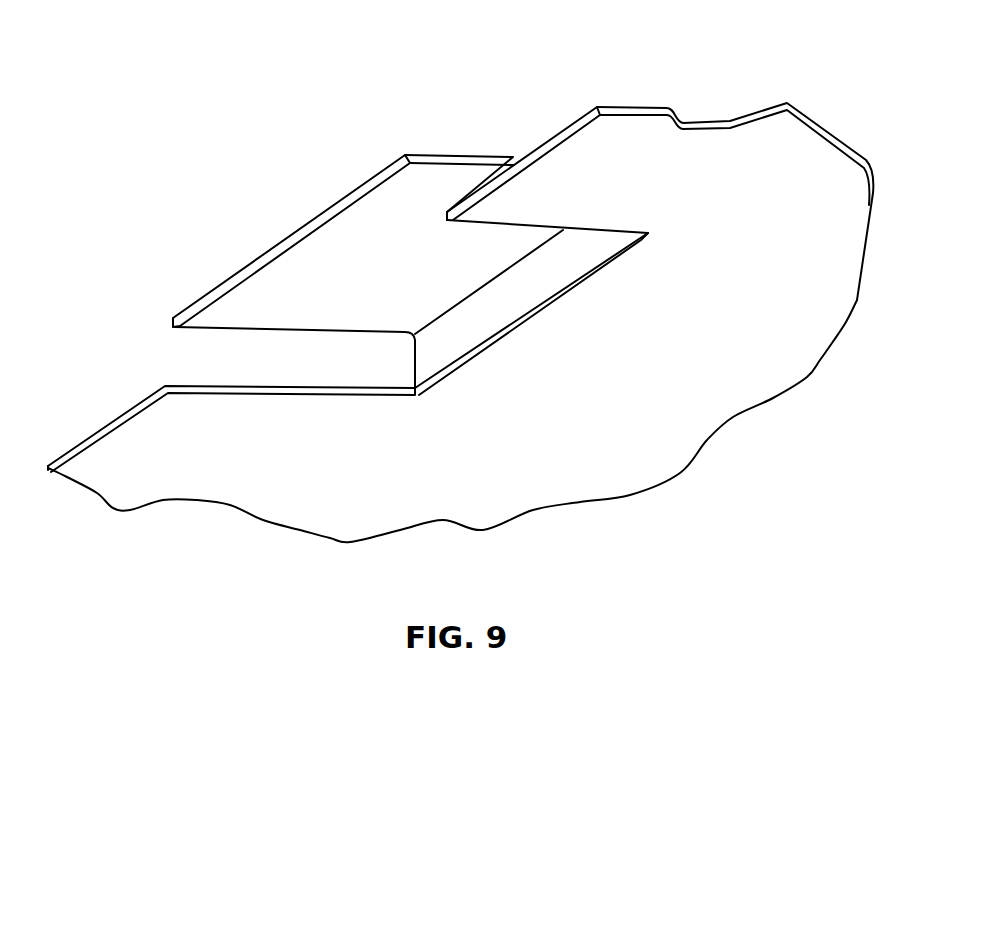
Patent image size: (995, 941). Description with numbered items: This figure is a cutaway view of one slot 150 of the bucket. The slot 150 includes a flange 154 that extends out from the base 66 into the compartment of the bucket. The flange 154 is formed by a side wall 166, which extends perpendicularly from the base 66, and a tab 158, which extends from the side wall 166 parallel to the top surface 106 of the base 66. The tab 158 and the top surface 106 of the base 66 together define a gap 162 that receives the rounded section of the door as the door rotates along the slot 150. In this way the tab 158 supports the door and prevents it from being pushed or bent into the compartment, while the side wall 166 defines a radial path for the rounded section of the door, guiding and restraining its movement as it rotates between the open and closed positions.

The base 66 is at (615, 145).
The top surface 106 is at (173, 382).
The slot 150 is at (258, 352).
The flange 154 is at (380, 166).
The tab 158 is at (315, 217).
The gap 162 is at (362, 357).
The side wall 166 is at (482, 318).